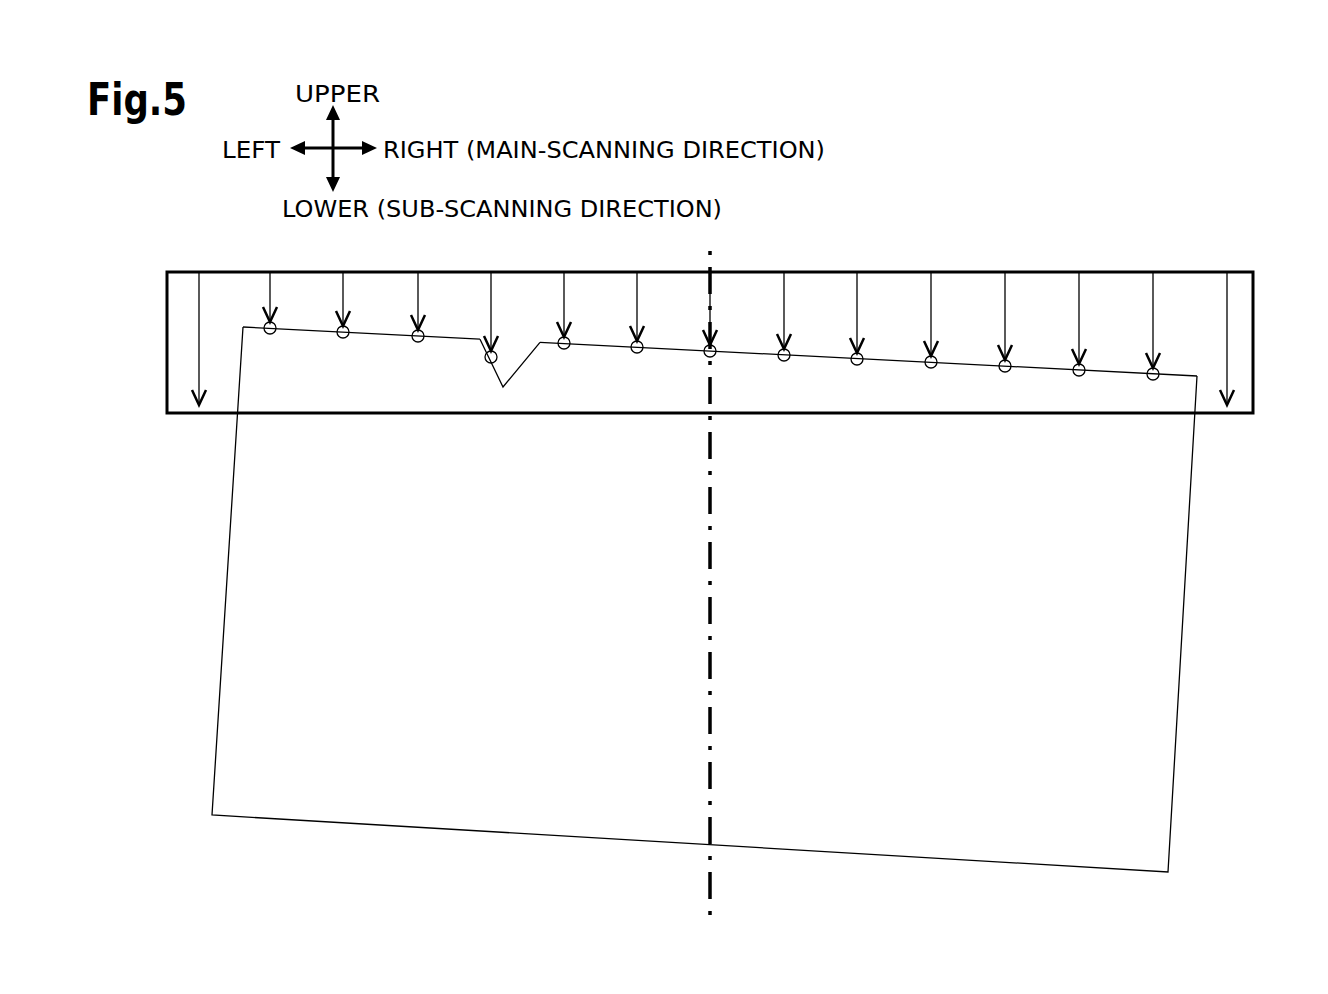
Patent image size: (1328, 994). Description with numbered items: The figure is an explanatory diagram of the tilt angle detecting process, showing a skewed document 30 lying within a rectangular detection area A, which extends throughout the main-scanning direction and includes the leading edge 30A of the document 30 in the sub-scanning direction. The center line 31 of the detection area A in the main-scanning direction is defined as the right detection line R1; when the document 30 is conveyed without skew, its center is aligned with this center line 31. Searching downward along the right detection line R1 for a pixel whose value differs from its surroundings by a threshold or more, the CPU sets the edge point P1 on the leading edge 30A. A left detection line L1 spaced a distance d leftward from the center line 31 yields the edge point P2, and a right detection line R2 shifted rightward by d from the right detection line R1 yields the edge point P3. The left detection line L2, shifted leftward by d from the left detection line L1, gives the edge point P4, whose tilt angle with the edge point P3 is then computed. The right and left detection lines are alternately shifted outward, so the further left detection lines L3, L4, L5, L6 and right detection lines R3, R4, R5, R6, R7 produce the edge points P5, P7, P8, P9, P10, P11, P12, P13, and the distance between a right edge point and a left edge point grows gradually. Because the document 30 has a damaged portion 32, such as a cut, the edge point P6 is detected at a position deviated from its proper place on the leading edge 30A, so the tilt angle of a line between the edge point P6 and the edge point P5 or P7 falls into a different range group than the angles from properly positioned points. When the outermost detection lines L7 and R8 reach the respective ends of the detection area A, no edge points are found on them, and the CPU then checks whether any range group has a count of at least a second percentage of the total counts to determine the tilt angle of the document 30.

The detection area A is at (375, 413).
The document 30 is at (1158, 665).
The leading edge 30A is at (962, 363).
The center line 31 is at (712, 600).
The damaged portion 32 is at (528, 350).
The left detection line L1 is at (637, 302).
The left detection line L2 is at (564, 302).
The left detection line L3 is at (491, 302).
The left detection line L4 is at (418, 302).
The left detection line L5 is at (343, 302).
The left detection line L6 is at (270, 302).
The left detection line L7 is at (199, 302).
The right detection line R1 is at (712, 302).
The right detection line R2 is at (784, 302).
The right detection line R3 is at (857, 302).
The right detection line R4 is at (931, 302).
The right detection line R5 is at (1005, 302).
The right detection line R6 is at (1079, 302).
The right detection line R7 is at (1153, 302).
The right detection line R8 is at (1227, 302).
The edge point P1 is at (714, 356).
The edge point P2 is at (637, 353).
The edge point P3 is at (787, 361).
The edge point P4 is at (564, 349).
The edge point P5 is at (858, 365).
The edge point P6 is at (488, 363).
The edge point P7 is at (932, 368).
The edge point P8 is at (418, 342).
The edge point P9 is at (1006, 372).
The edge point P10 is at (343, 338).
The edge point P11 is at (1078, 376).
The edge point P12 is at (270, 334).
The edge point P13 is at (1152, 380).